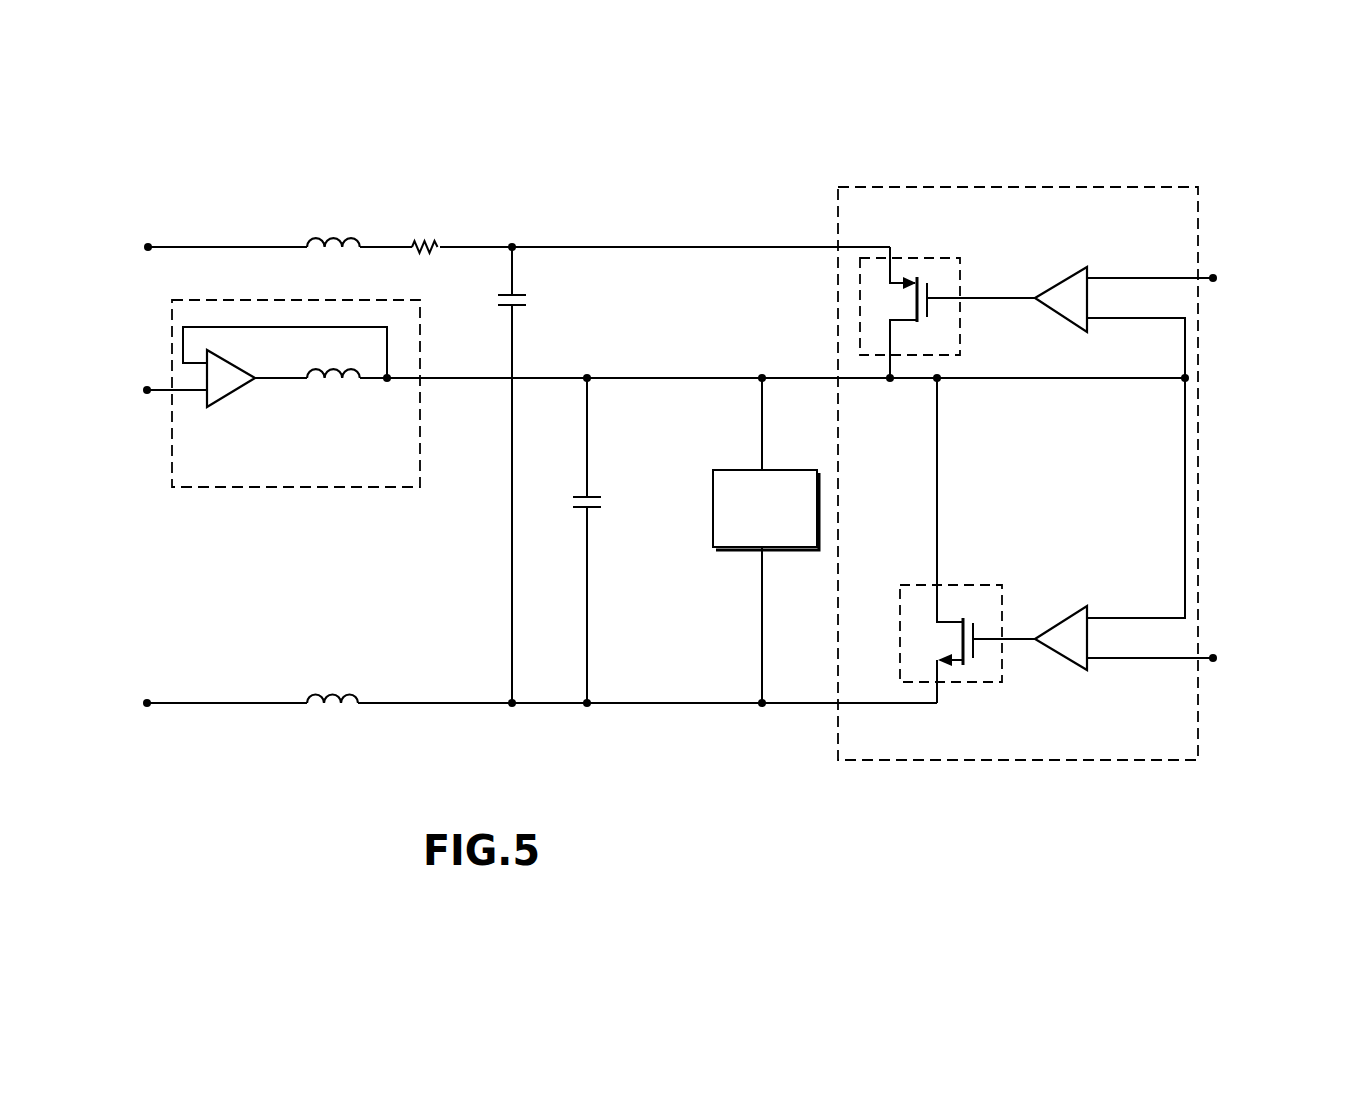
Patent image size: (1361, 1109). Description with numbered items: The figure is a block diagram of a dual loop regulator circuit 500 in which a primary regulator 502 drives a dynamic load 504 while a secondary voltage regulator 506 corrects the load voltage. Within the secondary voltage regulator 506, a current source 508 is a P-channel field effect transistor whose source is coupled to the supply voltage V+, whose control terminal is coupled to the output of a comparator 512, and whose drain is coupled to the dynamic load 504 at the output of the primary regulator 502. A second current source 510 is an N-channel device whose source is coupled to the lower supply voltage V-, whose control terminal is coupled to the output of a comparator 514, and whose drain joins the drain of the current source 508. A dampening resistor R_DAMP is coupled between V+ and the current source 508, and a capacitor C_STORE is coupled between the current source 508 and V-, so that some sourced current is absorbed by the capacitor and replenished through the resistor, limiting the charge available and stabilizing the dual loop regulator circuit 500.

The dual loop regulator circuit 500 is at (917, 143).
The primary regulator 502 is at (420, 487).
The dynamic load 504 is at (733, 548).
The secondary voltage regulator 506 is at (1137, 187).
The current source 508 is at (916, 259).
The current source 510 is at (956, 585).
The comparator 512 is at (1067, 292).
The comparator 514 is at (1057, 618).